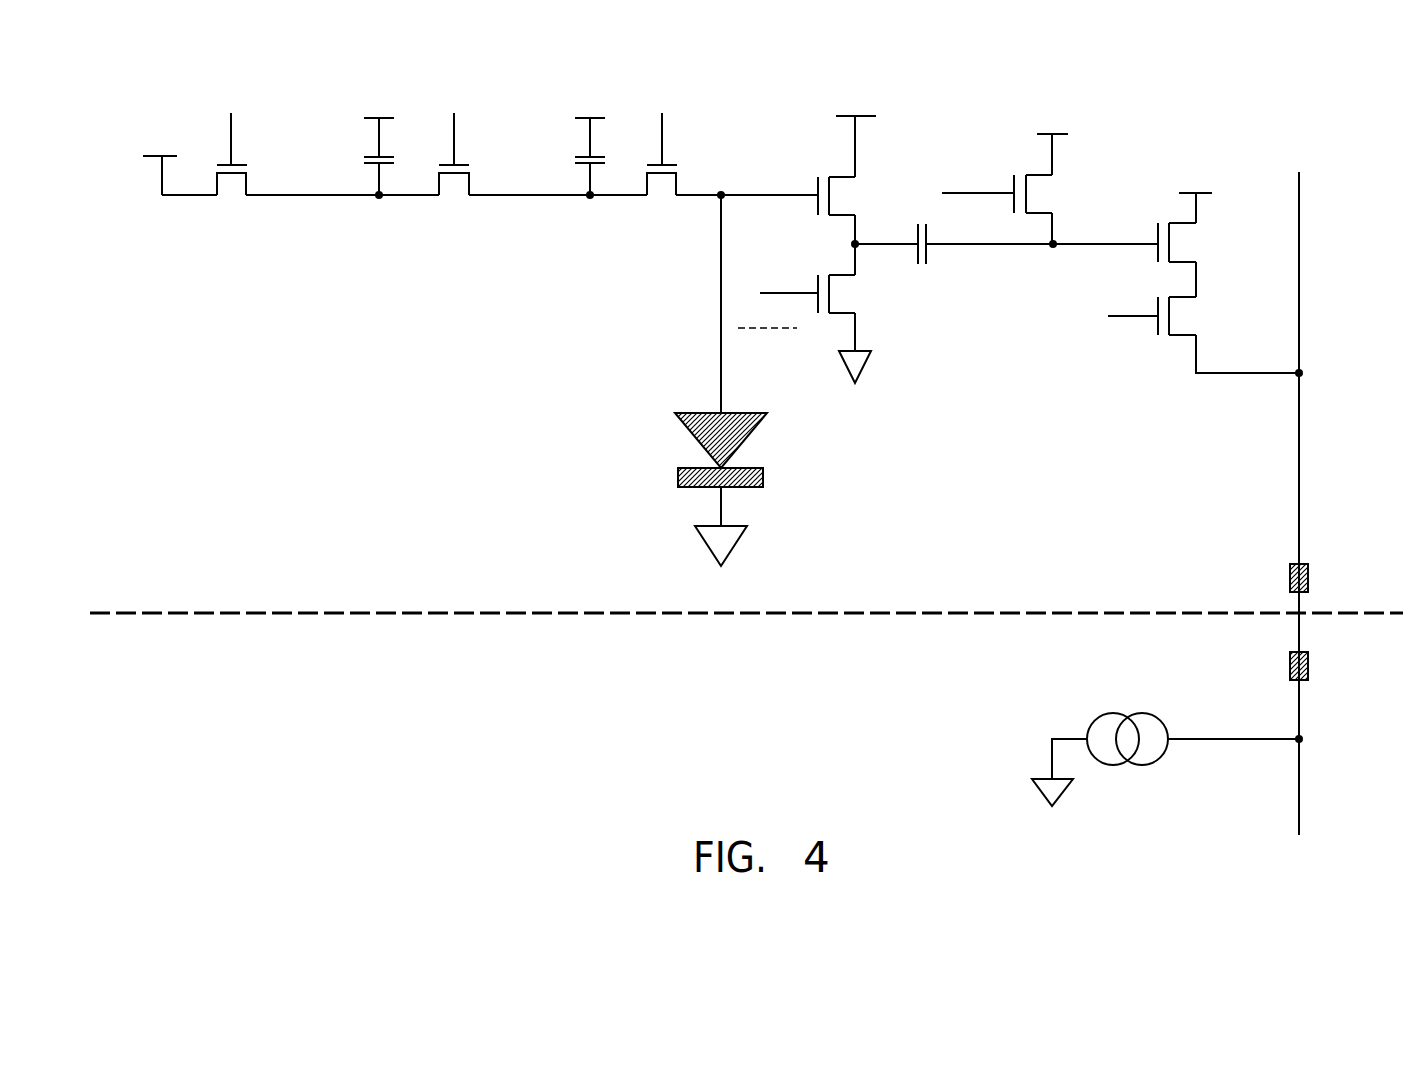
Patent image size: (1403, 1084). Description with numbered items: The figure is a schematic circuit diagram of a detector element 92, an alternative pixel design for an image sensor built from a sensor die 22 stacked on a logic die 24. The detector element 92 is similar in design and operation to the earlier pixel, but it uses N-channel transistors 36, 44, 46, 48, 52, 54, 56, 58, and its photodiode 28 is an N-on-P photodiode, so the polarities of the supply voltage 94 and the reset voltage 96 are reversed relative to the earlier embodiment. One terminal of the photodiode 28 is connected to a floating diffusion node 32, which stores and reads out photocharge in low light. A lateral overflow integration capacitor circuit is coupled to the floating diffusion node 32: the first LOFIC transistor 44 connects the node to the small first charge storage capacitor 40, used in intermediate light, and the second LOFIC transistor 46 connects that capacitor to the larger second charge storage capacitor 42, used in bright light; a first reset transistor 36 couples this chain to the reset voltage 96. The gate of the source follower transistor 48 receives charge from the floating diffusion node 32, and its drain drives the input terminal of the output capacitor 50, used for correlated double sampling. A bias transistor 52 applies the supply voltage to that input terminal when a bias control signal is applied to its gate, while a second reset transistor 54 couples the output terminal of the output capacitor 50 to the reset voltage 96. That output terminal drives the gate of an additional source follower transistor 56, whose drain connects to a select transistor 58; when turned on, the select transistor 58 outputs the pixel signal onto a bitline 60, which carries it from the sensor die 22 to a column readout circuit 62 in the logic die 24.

The sensor die 22 is at (135, 591).
The logic die 24 is at (135, 665).
The photodiode 28 is at (690, 413).
The floating diffusion node 32 is at (721, 197).
The first reset transistor 36 is at (246, 185).
The first charge storage capacitor 40 is at (592, 156).
The second charge storage capacitor 42 is at (378, 176).
The first LOFIC transistor 44 is at (676, 178).
The second LOFIC transistor 46 is at (469, 177).
The source follower transistor 48 is at (834, 178).
The output capacitor 50 is at (927, 255).
The bias transistor 52 is at (831, 275).
The second reset transistor 54 is at (1032, 176).
The additional source follower transistor 56 is at (1173, 337).
The select transistor 58 is at (1178, 222).
The bitline 60 is at (1299, 222).
The column readout circuit 62 is at (1140, 765).
The detector element 92 is at (1283, 92).
The supply voltage 94 is at (702, 543).
The reset voltage 96 is at (150, 156).